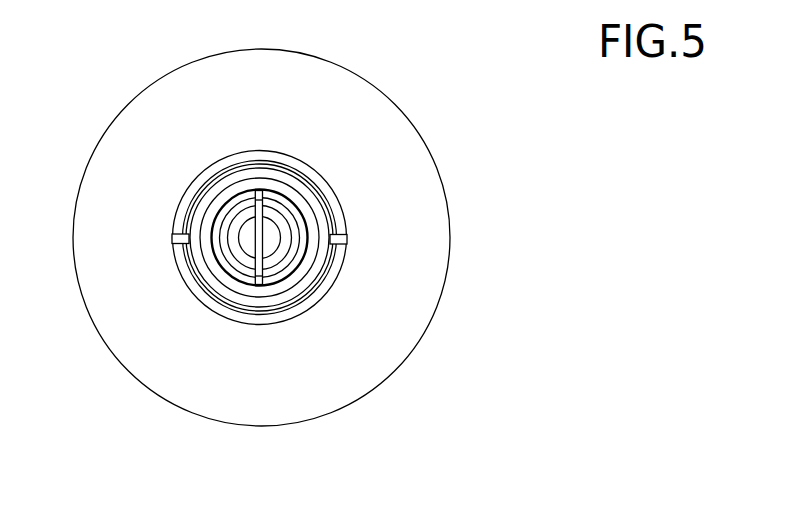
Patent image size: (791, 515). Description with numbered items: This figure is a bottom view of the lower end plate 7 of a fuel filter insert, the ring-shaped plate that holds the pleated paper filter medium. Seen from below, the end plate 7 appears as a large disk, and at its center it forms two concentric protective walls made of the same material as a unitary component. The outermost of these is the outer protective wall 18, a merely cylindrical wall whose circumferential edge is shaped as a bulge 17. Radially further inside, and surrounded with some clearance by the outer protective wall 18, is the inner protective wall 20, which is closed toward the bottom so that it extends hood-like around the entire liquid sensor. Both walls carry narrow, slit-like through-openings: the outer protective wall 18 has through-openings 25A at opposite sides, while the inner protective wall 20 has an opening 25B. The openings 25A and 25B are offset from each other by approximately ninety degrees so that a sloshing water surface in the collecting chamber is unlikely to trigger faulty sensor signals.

The lower end plate 7 is at (410, 193).
The bulge 17 is at (300, 307).
The outer protective wall 18 is at (326, 280).
The inner protective wall 20 is at (233, 262).
The through-openings in the outer protective wall 25A is at (160, 246).
The through-opening in the inner protective wall 25B is at (259, 302).